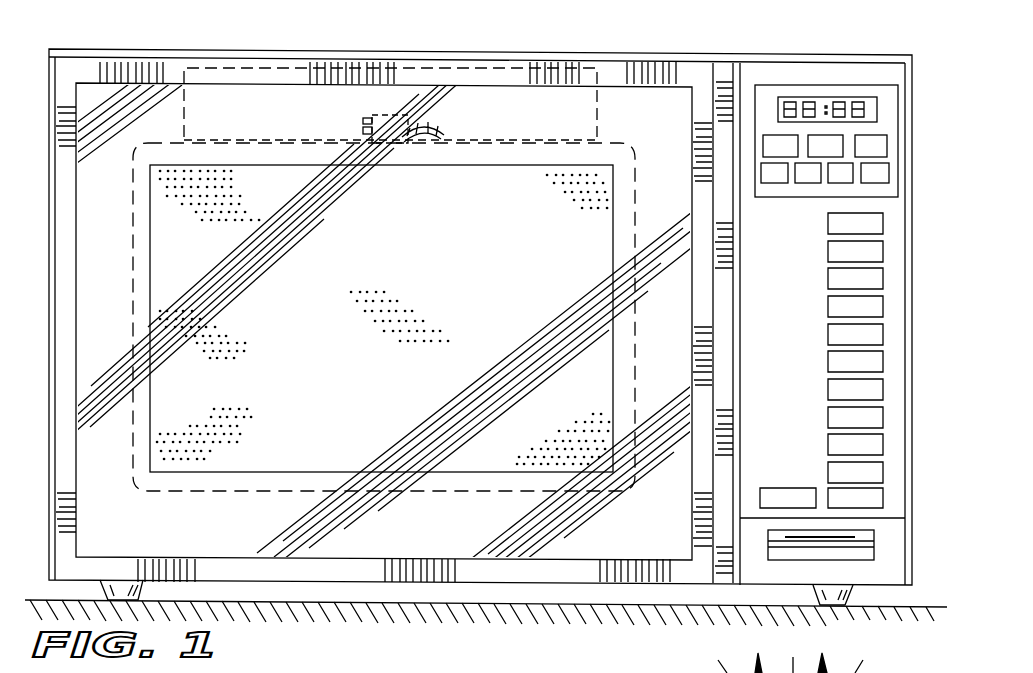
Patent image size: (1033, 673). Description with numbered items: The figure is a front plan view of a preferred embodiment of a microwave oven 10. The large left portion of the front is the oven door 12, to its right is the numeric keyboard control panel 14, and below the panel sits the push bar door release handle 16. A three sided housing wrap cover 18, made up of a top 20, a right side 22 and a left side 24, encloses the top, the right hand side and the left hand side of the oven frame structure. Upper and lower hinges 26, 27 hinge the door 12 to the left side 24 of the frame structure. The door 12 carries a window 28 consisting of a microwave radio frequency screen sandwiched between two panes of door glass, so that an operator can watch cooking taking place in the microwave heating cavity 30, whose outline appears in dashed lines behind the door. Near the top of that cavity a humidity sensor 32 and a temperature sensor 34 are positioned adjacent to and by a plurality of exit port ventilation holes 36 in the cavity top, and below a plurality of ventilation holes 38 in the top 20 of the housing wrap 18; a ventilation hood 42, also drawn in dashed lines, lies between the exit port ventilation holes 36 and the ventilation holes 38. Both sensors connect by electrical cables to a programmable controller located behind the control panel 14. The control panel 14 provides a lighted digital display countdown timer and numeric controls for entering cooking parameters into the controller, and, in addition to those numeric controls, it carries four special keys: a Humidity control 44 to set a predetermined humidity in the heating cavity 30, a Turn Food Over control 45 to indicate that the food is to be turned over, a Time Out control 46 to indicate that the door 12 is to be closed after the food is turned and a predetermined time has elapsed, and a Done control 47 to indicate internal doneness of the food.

The microwave oven 10 is at (200, 47).
The oven door 12 is at (677, 138).
The numeric keyboard control panel 14 is at (780, 73).
The push bar door release handle 16 is at (873, 540).
The housing wrap cover 18 is at (423, 48).
The top 20 is at (520, 50).
The right side 22 is at (912, 460).
The left side 24 is at (50, 338).
The upper hinge 26 is at (95, 49).
The lower hinge 27 is at (48, 578).
The window 28 is at (212, 276).
The microwave heating cavity 30 is at (635, 463).
The humidity sensor 32 is at (362, 130).
The temperature sensor 34 is at (366, 118).
The exit port ventilation holes 36 is at (400, 138).
The ventilation holes 38 is at (323, 50).
The ventilation hood 42 is at (597, 95).
The Humidity control 44 is at (761, 172).
The Turn Food Over control 45 is at (818, 184).
The Time Out control 46 is at (850, 183).
The Done control 47 is at (890, 172).